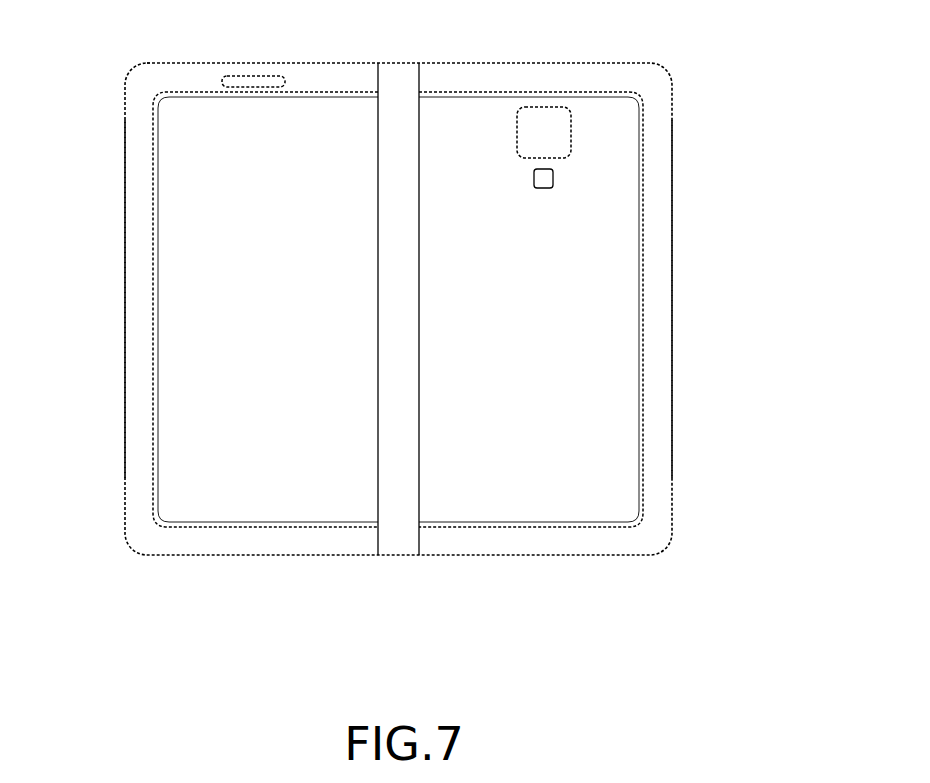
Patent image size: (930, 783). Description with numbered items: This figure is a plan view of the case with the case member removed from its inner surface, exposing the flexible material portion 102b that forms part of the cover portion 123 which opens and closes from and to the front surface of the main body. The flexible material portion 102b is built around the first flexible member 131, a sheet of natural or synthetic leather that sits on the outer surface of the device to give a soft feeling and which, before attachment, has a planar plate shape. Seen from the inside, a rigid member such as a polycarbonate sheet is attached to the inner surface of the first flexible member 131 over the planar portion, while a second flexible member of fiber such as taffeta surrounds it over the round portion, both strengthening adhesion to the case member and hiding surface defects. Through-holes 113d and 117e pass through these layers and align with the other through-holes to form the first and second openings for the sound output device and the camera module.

The flexible material portion 102b is at (688, 62).
The cover portion 123 is at (114, 54).
The first flexible member 131 is at (401, 535).
The through-hole 113d is at (253, 80).
The through-hole 117e is at (543, 120).